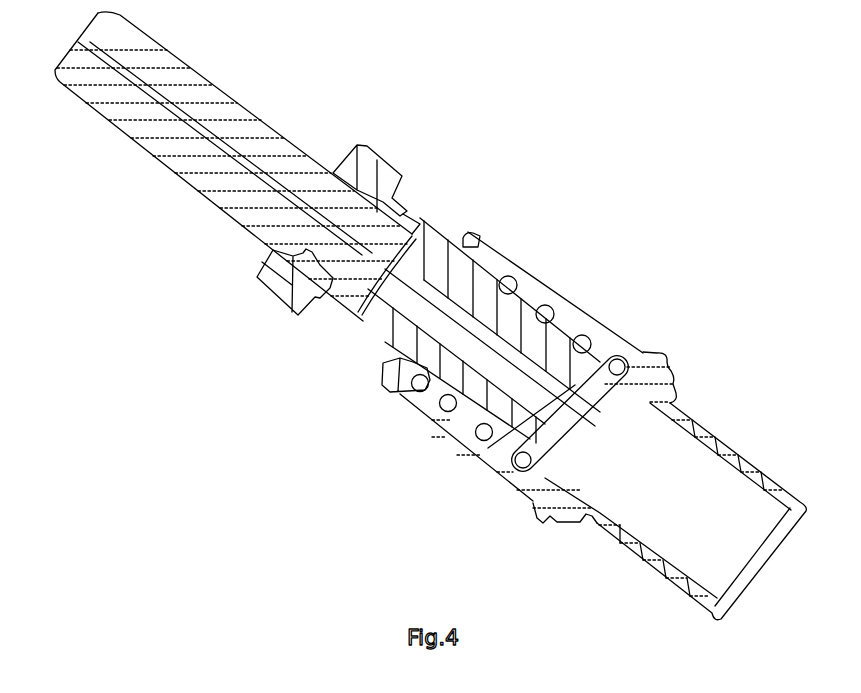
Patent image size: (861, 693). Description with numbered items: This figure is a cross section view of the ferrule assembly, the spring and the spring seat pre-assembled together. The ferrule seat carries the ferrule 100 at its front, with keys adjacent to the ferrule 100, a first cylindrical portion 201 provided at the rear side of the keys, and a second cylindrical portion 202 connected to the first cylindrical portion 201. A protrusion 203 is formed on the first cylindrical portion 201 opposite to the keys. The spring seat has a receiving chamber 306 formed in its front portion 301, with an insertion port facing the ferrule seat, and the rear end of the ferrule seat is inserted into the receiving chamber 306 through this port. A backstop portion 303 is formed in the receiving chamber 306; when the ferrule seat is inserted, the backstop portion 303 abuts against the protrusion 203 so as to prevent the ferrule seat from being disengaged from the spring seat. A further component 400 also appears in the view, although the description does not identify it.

The ferrule 100 is at (211, 91).
The first cylindrical portion 201 is at (340, 340).
The second cylindrical portion 202 is at (478, 405).
The protrusion 203 is at (497, 268).
The front portion 301 is at (593, 320).
The backstop portion 303 is at (465, 233).
The receiving chamber 306 is at (480, 443).
The clip 400 is at (403, 383).